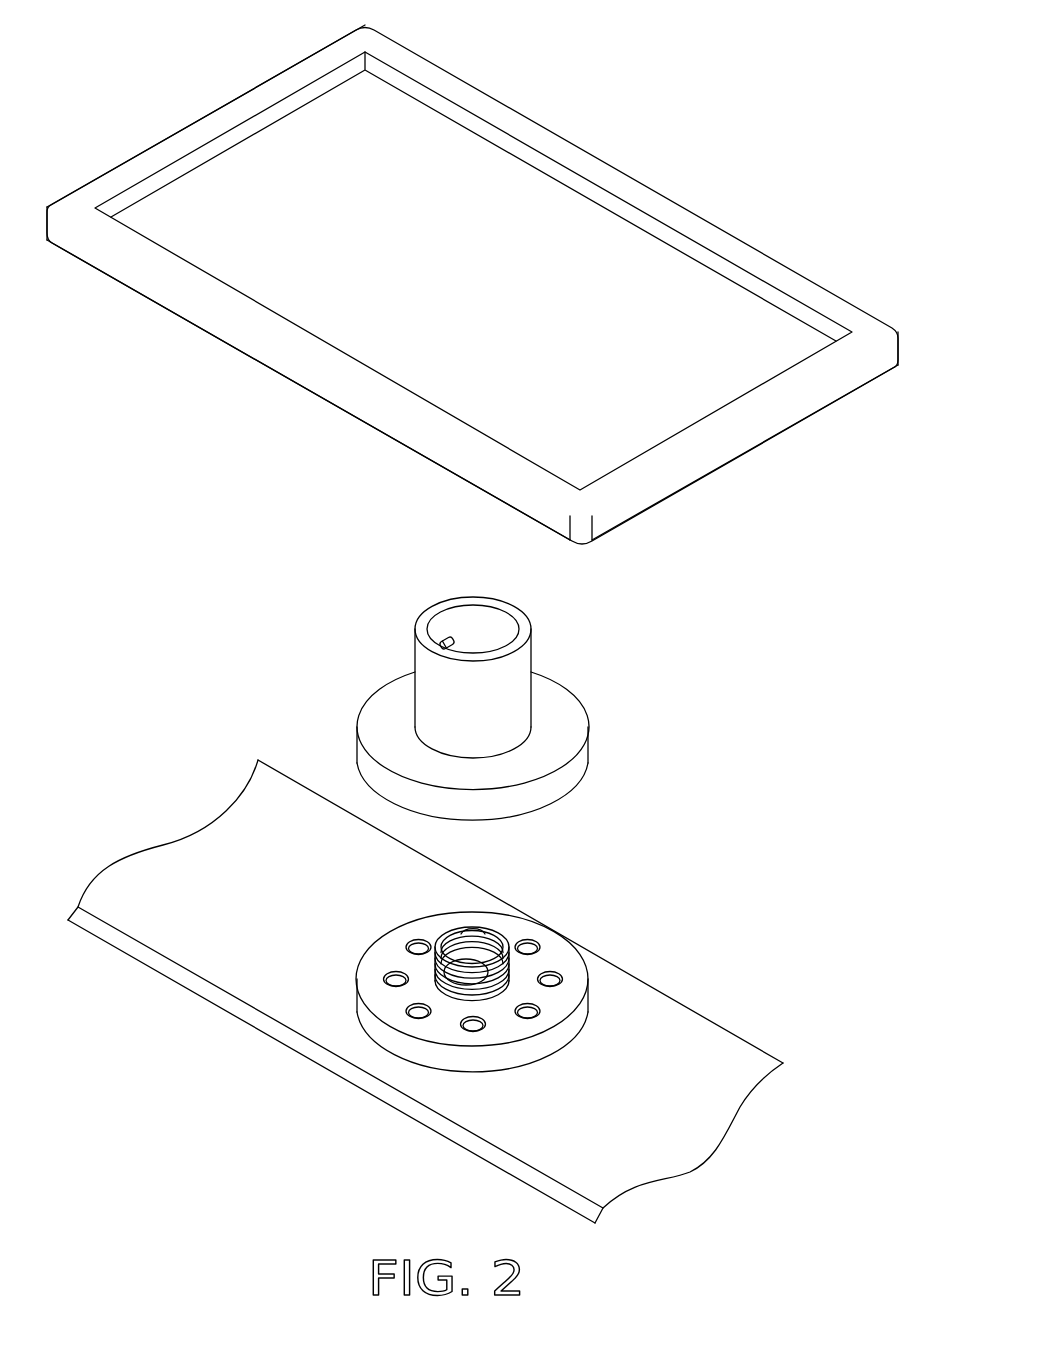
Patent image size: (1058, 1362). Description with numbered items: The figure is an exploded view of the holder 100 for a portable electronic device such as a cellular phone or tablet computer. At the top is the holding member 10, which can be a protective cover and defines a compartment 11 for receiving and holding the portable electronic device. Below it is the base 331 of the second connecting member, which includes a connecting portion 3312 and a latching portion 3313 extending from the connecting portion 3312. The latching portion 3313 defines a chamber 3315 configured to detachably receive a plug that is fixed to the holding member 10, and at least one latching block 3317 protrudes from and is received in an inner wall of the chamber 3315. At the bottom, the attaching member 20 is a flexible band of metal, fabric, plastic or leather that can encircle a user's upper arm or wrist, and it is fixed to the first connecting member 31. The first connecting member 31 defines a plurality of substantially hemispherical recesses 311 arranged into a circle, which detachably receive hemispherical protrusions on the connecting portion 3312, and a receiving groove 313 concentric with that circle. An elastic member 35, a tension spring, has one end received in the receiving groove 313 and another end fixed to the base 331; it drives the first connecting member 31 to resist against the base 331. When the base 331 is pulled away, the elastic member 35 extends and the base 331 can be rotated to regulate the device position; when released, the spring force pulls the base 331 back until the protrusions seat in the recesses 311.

The holder 100 is at (631, 40).
The holding member 10 is at (645, 197).
The compartment 11 is at (688, 308).
The attaching member 20 is at (707, 1065).
The first connecting member 31 is at (420, 1049).
The recesses 311 is at (550, 983).
The receiving groove 313 is at (460, 967).
The elastic member 35 is at (500, 940).
The base 331 is at (718, 637).
The connecting portion 3312 is at (573, 768).
The latching portion 3313 is at (512, 685).
The chamber 3315 is at (463, 613).
The latching block 3317 is at (440, 645).